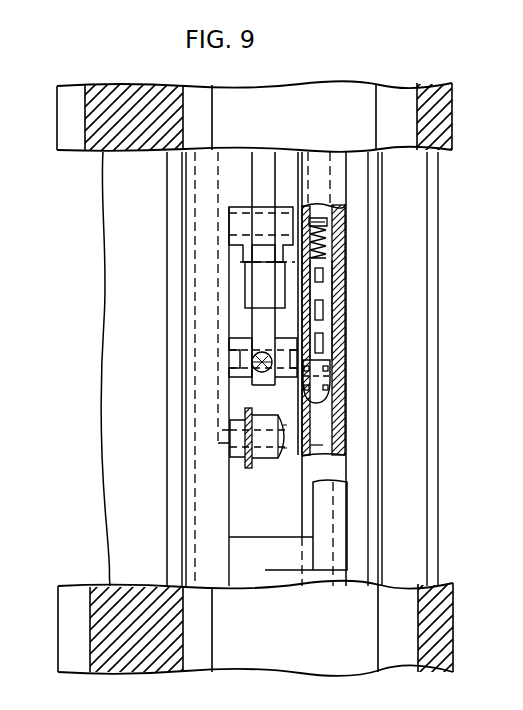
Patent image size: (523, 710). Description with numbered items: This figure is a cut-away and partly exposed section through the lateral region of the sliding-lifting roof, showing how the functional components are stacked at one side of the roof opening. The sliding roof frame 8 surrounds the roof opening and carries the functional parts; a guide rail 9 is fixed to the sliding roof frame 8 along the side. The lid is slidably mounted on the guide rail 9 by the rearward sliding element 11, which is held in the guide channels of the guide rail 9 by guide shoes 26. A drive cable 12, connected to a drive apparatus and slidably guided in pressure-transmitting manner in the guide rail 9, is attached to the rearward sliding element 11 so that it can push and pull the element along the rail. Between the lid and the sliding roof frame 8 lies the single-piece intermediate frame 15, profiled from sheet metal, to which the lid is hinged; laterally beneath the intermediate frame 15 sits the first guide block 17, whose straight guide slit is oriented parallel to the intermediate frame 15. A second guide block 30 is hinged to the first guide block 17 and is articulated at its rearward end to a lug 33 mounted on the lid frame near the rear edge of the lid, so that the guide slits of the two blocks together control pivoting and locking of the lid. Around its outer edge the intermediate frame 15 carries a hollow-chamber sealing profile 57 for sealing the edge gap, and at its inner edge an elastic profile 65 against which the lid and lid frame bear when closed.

The sliding roof frame 8 is at (120, 503).
The guide rail 9 is at (200, 229).
The rearward sliding element 11 is at (335, 288).
The drive cable 12 is at (318, 228).
The intermediate frame 15 is at (297, 128).
The first guide block 17 is at (338, 503).
The guide shoes 26 is at (218, 183).
The second guide block 30 is at (260, 394).
The lug 33 is at (258, 468).
The sealing profile 57 is at (105, 117).
The elastic profile 65 is at (452, 112).